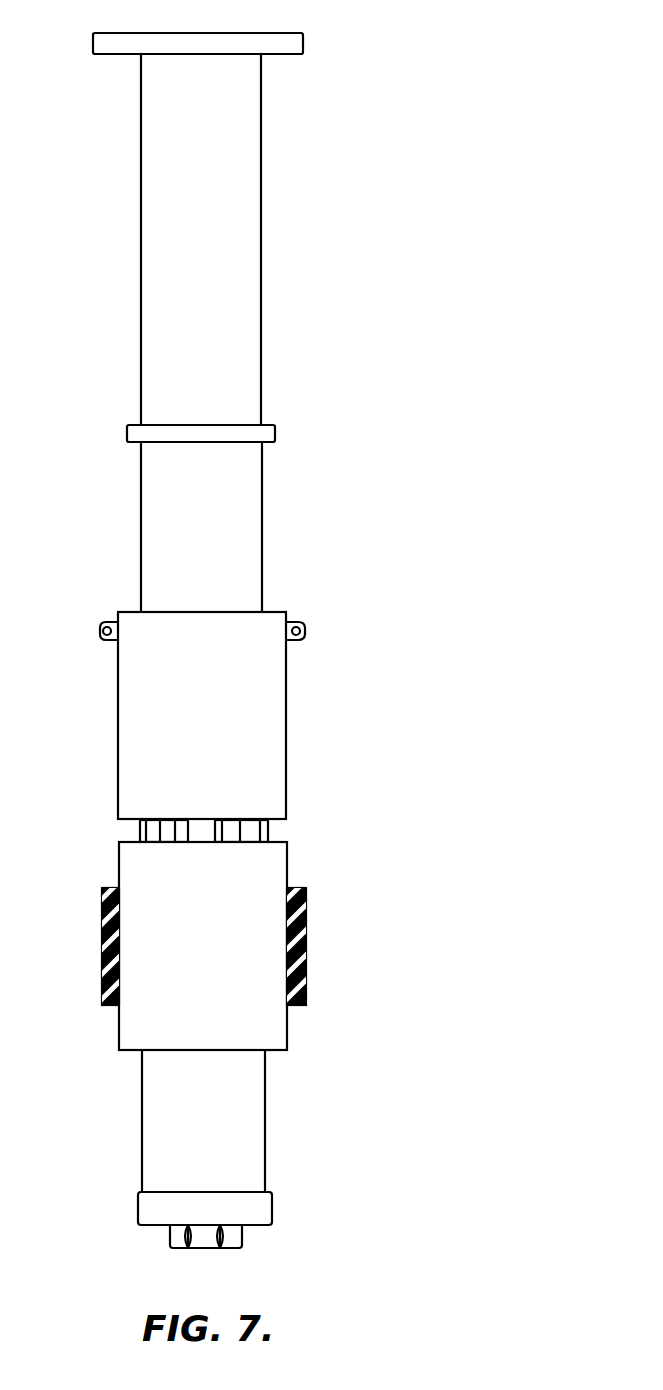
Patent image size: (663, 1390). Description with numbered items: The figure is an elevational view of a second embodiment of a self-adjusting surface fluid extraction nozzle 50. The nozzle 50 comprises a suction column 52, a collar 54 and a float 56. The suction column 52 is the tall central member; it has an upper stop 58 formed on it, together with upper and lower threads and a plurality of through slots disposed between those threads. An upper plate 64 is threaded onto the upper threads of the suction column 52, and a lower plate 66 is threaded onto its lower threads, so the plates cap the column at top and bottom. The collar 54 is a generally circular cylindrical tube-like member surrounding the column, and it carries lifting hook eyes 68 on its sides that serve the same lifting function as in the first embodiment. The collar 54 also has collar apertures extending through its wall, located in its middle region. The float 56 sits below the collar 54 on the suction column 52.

The self-adjusting surface fluid extraction nozzle 50 is at (412, 240).
The suction column 52 is at (242, 242).
The collar 54 is at (261, 628).
The float 56 is at (310, 950).
The upper stop 58 is at (275, 428).
The upper plate 64 is at (278, 45).
The lower plate 66 is at (237, 1218).
The lifting hook eyes 68 is at (100, 626).